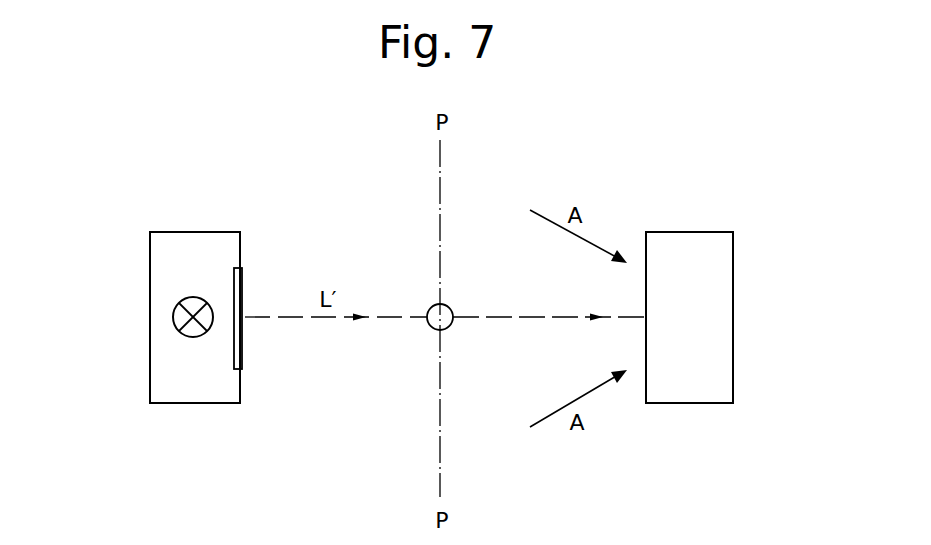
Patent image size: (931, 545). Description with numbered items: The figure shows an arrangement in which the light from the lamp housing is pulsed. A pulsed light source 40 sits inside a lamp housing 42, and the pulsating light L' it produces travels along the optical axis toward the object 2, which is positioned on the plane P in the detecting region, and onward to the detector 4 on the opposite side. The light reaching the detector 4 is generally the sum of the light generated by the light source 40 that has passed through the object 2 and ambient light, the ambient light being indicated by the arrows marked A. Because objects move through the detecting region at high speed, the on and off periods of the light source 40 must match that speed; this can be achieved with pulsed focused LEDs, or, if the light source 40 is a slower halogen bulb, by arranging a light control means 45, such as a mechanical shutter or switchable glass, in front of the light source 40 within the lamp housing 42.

The object 2 is at (449, 306).
The detector 4 is at (710, 292).
The pulsed light source 40 is at (174, 313).
The lamp housing 42 is at (180, 247).
The light control means 45 is at (241, 350).